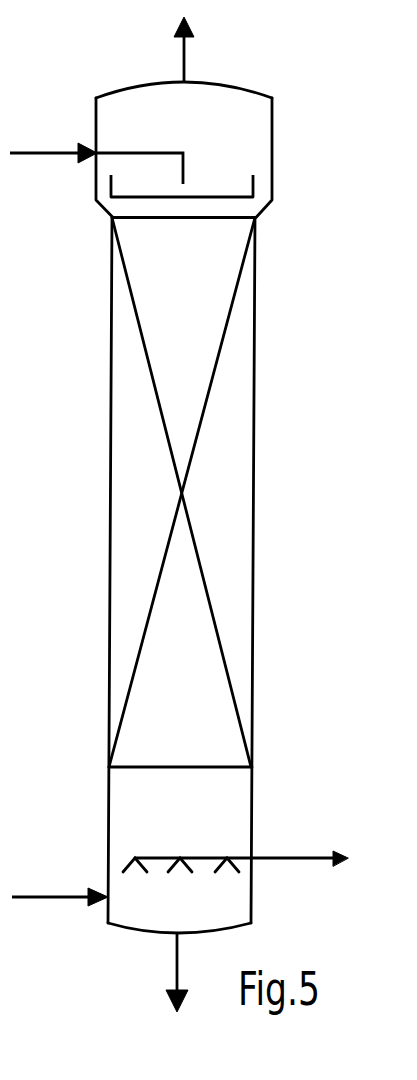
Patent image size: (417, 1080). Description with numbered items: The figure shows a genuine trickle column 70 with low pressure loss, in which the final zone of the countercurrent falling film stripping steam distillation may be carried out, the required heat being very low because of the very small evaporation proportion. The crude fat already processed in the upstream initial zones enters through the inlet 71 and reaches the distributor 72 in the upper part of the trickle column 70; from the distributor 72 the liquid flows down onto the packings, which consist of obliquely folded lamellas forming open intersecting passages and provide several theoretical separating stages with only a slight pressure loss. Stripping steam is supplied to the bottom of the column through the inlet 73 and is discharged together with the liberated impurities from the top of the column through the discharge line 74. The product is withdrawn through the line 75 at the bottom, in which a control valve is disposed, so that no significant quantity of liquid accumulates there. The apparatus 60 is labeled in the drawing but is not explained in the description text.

The scrubbing apparatus 60 is at (0, 717).
The scrubbing column 70 is at (270, 434).
The gas inlet 71 is at (40, 155).
The distributor tray 72 is at (255, 182).
The liquid outlet 73 is at (346, 850).
The gas outlet 74 is at (185, 45).
The bottom outlet 75 is at (173, 975).